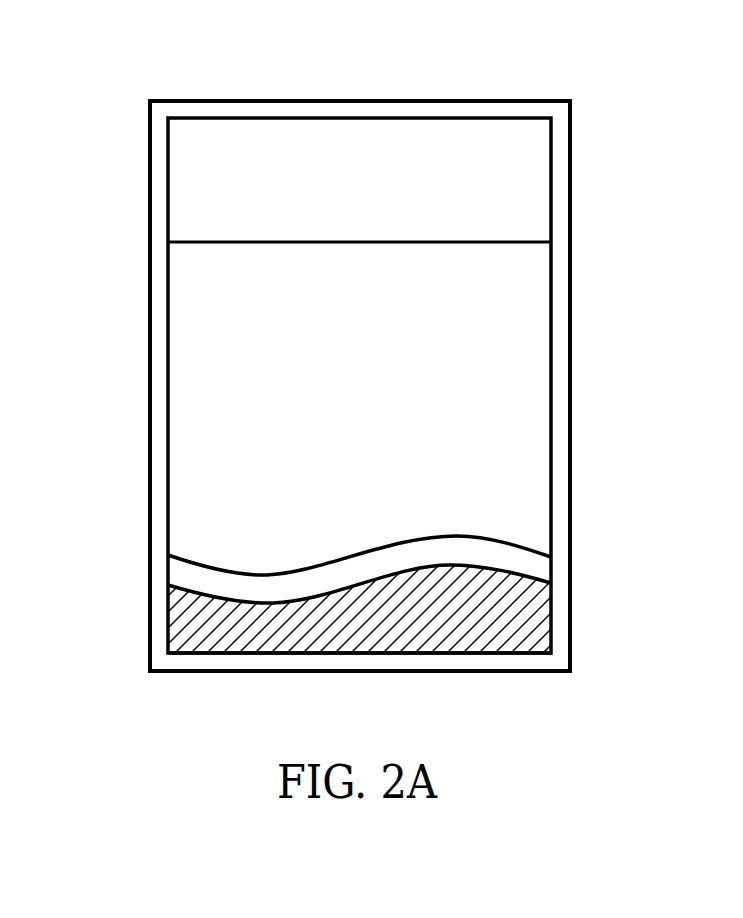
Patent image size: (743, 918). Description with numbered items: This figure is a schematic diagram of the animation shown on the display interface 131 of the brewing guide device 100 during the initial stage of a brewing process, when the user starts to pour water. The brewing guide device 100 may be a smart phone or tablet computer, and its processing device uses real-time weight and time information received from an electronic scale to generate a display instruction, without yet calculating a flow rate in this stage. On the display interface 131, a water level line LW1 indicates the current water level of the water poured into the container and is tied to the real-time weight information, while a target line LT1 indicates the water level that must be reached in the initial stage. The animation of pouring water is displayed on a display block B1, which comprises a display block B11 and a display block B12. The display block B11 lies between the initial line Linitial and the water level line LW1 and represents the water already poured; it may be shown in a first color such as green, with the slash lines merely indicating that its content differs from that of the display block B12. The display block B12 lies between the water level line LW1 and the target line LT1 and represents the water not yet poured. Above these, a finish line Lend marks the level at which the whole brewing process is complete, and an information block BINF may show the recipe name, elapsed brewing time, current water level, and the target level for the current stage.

The brewing guide device 100 is at (263, 100).
The display interface 131 is at (475, 117).
The information block BINF is at (515, 180).
The finish line Lend is at (515, 243).
The target line LT1 is at (512, 537).
The water level line LW1 is at (512, 575).
The initial line Linitial is at (505, 653).
The display block B1 is at (78, 550).
The display block B11 is at (180, 618).
The display block B12 is at (180, 573).